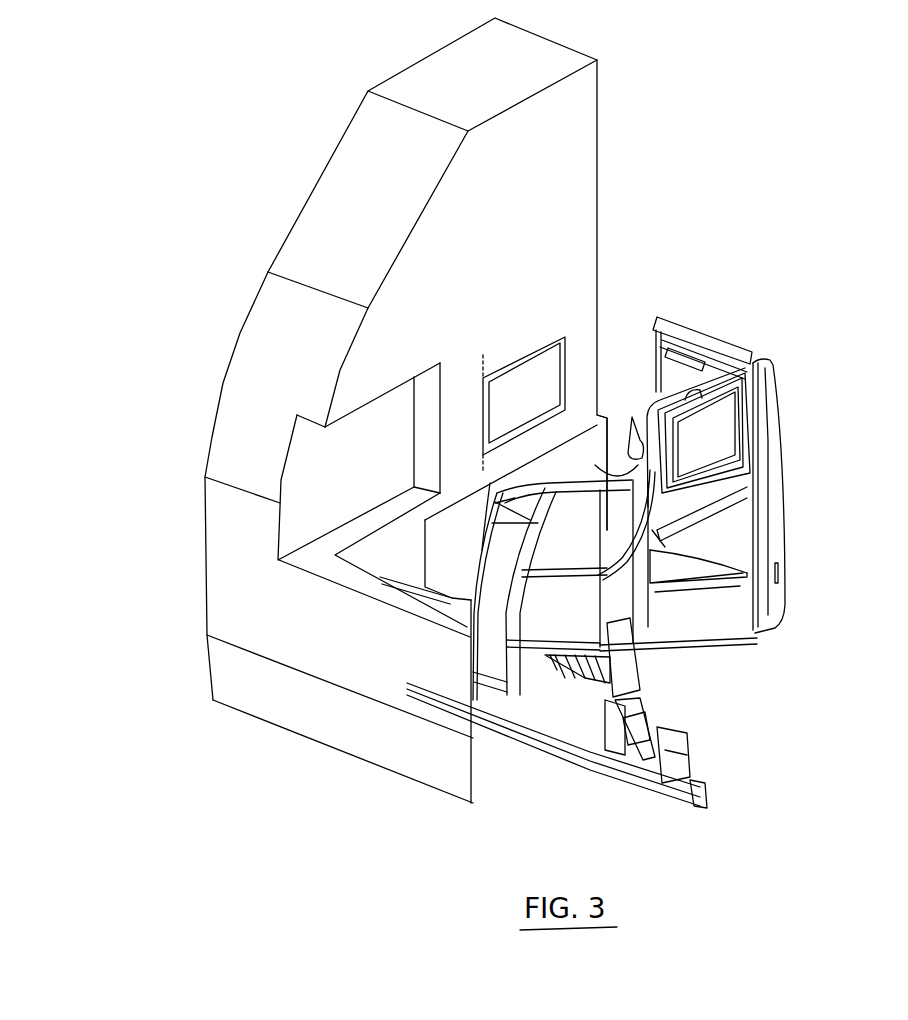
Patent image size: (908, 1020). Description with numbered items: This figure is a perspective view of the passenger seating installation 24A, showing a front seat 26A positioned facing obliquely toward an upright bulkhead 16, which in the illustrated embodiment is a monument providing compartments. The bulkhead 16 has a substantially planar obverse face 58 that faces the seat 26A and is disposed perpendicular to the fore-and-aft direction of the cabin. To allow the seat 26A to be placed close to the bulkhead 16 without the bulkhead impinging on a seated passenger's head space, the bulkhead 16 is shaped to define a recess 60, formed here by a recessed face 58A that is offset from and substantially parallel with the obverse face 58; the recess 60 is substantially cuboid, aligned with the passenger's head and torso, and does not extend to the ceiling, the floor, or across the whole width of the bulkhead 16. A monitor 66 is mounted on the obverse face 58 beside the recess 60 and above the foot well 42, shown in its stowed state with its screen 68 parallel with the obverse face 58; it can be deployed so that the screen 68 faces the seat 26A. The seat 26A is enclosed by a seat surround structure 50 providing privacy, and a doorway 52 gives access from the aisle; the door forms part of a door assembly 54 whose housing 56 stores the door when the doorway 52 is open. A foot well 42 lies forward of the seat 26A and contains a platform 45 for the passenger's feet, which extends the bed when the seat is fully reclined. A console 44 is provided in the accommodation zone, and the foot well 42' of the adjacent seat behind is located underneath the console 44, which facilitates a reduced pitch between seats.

The bulkhead 16 is at (580, 137).
The passenger seating installation 24A is at (736, 196).
The seat 26A is at (478, 550).
The foot well 42 is at (607, 497).
The foot well 42' is at (759, 521).
The console 44 is at (660, 472).
The platform 45 is at (727, 587).
The seat surround structure 50 is at (713, 345).
The doorway 52 is at (622, 327).
The door assembly 54 is at (758, 348).
The housing 56 is at (782, 445).
The obverse face 58 is at (506, 277).
The recessed face 58A is at (362, 464).
The recess 60 is at (320, 504).
The monitor 66 is at (527, 353).
The screen 68 is at (540, 403).